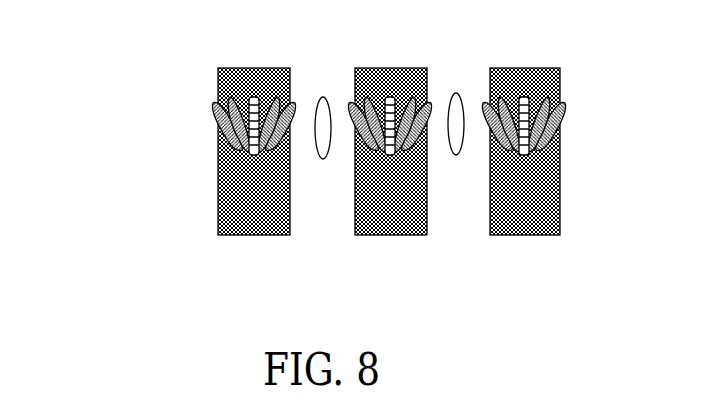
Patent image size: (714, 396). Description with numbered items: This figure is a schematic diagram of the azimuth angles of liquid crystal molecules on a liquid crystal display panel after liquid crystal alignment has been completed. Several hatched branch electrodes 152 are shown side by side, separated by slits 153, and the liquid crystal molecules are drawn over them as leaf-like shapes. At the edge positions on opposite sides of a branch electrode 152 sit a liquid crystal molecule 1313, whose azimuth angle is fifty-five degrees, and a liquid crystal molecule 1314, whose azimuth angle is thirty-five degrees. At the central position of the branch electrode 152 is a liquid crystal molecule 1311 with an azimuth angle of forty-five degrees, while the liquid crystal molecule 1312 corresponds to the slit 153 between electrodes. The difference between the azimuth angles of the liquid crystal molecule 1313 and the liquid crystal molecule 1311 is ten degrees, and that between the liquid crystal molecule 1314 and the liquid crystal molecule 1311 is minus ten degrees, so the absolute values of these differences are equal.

The branch electrode 152 is at (250, 235).
The slit 153 is at (332, 228).
The liquid crystal molecule 1311 is at (217, 133).
The liquid crystal molecule 1312 is at (322, 97).
The liquid crystal molecule 1313 is at (213, 105).
The liquid crystal molecule 1314 is at (300, 105).